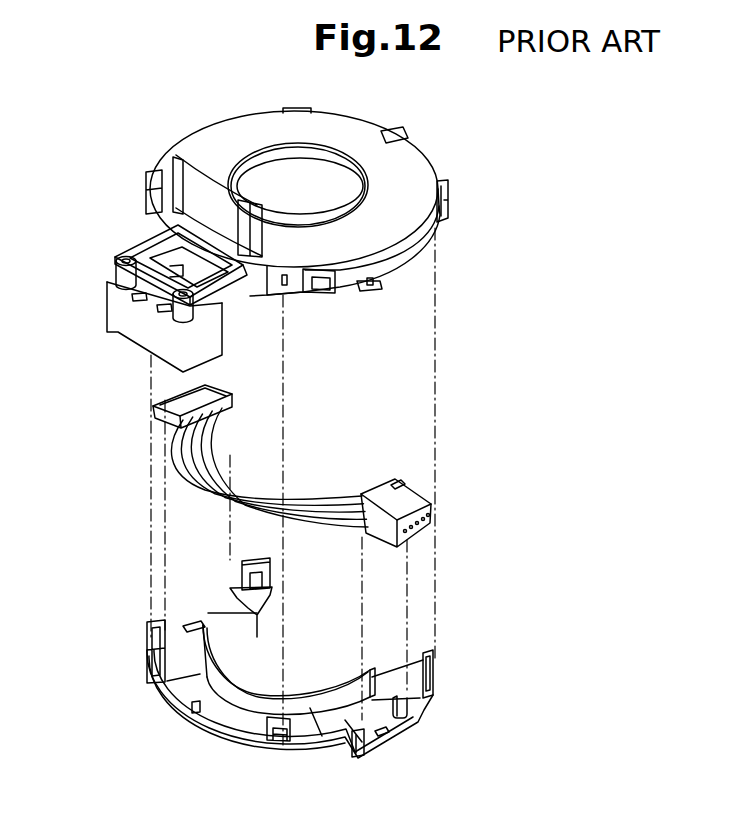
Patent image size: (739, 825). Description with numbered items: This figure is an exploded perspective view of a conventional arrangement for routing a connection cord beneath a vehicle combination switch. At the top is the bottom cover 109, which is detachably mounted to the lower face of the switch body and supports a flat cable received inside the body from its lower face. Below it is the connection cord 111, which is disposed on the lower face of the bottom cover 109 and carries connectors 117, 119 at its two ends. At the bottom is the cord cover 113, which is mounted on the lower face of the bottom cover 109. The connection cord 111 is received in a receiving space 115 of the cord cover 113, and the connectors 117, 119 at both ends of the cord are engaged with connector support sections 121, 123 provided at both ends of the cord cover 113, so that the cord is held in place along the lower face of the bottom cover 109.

The bottom cover 109 is at (422, 170).
The connection cord 111 is at (247, 480).
The cord cover 113 is at (213, 728).
The receiving space 115 is at (210, 717).
The connector 117 is at (215, 389).
The connector 119 is at (417, 497).
The connector support section 121 is at (238, 634).
The connector support section 123 is at (390, 732).